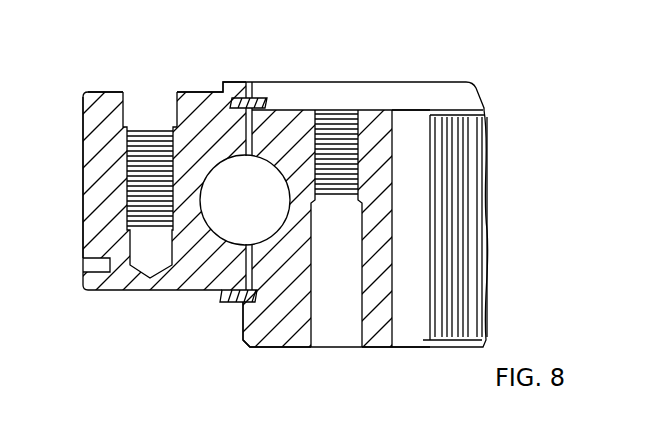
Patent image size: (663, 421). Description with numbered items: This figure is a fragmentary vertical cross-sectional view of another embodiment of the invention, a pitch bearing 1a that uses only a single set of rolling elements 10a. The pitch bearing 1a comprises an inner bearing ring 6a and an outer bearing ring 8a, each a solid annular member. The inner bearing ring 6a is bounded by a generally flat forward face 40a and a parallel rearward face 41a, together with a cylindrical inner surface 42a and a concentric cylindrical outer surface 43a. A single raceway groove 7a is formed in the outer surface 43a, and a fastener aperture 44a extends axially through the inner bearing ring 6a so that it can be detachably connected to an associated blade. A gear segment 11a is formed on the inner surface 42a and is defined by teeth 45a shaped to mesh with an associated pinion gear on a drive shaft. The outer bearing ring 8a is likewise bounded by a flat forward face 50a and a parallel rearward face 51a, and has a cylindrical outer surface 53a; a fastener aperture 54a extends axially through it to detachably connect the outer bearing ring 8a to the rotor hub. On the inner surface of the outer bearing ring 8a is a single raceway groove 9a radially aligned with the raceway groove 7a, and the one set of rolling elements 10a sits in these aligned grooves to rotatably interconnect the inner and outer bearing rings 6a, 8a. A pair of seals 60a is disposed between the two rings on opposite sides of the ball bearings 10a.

The pitch bearing 1a is at (455, 57).
The inner bearing ring 6a is at (262, 340).
The raceway groove 7a is at (262, 163).
The outer bearing ring 8a is at (98, 208).
The raceway groove 9a is at (240, 157).
The rolling elements 10a is at (245, 200).
The gear segment 11a is at (480, 160).
The forward face 40a is at (368, 108).
The rearward face 41a is at (367, 350).
The inner surface 42a is at (392, 322).
The outer surface 43a is at (243, 337).
The fastener aperture 44a is at (327, 330).
The teeth 45a is at (463, 277).
The forward face 50a is at (97, 91).
The rearward face 51a is at (120, 292).
The outer surface 53a is at (82, 130).
The fastener aperture 54a is at (123, 93).
The seal 60a is at (256, 98).